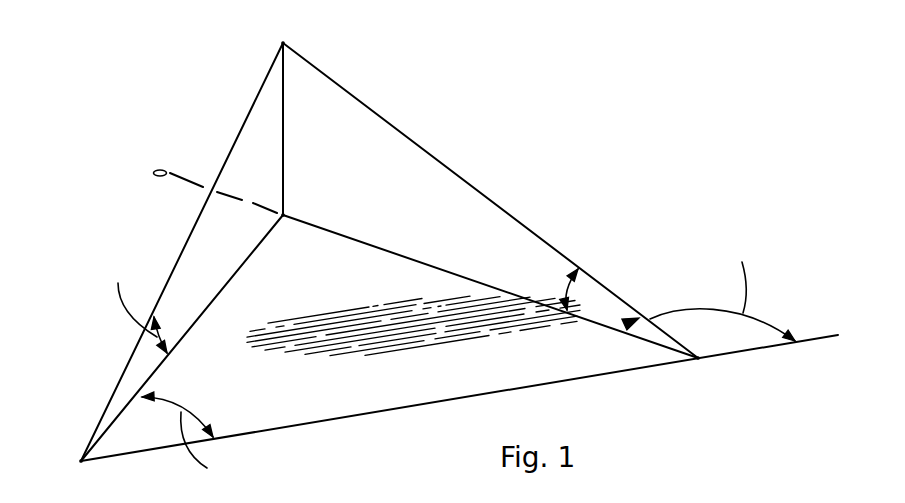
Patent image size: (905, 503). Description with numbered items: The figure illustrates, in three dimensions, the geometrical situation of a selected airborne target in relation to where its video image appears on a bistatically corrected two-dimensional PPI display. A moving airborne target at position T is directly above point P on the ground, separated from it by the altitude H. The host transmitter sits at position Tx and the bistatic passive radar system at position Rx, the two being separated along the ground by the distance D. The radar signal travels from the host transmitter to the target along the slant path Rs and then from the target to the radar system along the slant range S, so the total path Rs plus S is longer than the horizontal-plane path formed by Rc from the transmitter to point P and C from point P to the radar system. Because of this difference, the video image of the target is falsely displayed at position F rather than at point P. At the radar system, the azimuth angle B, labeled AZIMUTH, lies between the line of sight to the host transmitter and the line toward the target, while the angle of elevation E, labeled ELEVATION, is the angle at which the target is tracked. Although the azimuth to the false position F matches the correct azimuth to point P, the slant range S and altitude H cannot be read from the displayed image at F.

The target position T is at (282, 30).
The altitude H is at (293, 129).
The slant path from host transmitter to target Rs is at (490, 200).
The horizontal path from host transmitter to point P Rc is at (490, 286).
The ground point beneath target P is at (285, 218).
The false display position F is at (214, 180).
The slant range S is at (182, 252).
The horizontal range from radar system to point P C is at (182, 338).
The angle of elevation E is at (166, 335).
The azimuth angle B is at (177, 414).
The distance between radar system and host transmitter D is at (459, 398).
The host transmitter position Tx is at (712, 374).
The bistatic passive radar system position Rx is at (83, 476).
The elevation angle label ELEVATION is at (87, 300).
The azimuth angle label AZIMUTH is at (483, 361).